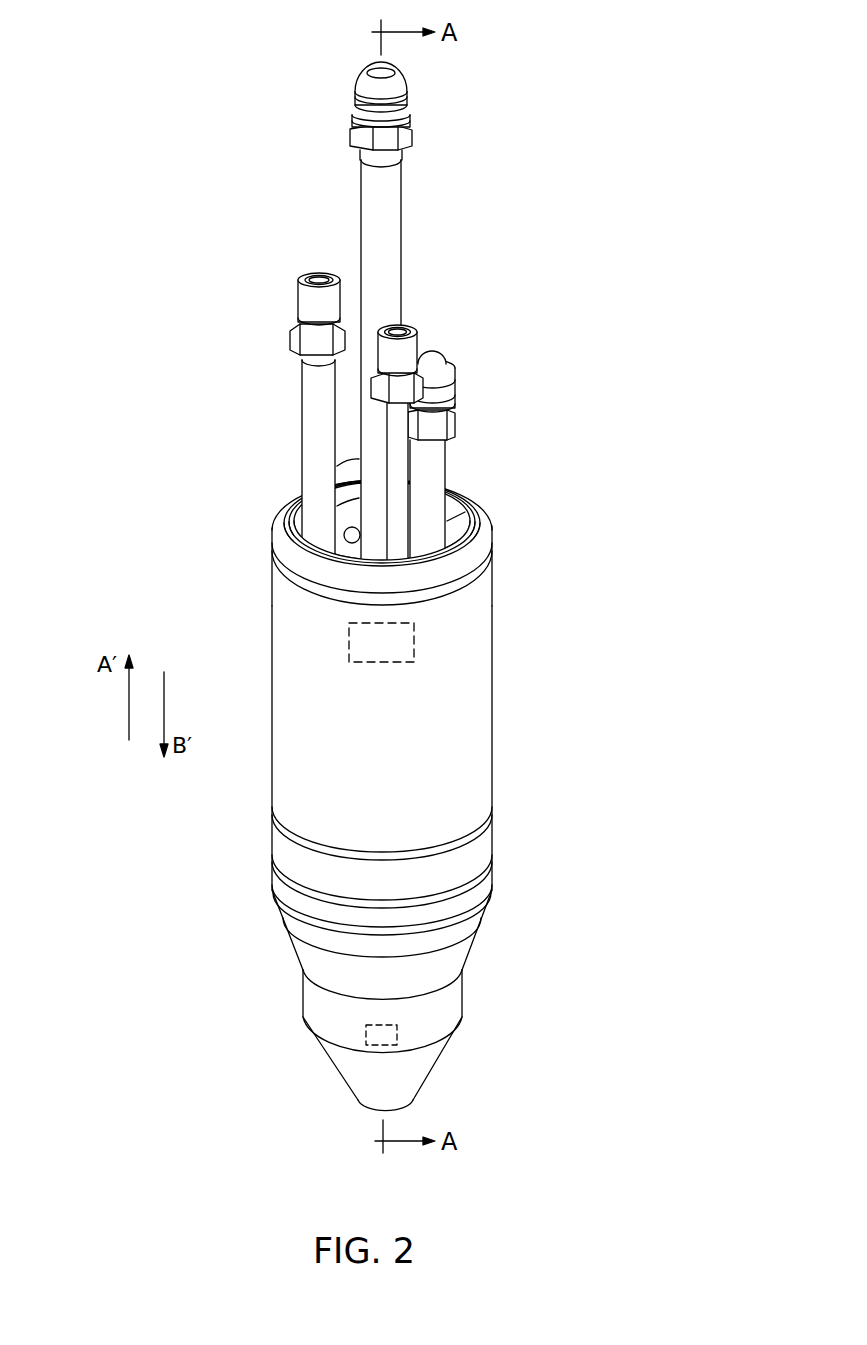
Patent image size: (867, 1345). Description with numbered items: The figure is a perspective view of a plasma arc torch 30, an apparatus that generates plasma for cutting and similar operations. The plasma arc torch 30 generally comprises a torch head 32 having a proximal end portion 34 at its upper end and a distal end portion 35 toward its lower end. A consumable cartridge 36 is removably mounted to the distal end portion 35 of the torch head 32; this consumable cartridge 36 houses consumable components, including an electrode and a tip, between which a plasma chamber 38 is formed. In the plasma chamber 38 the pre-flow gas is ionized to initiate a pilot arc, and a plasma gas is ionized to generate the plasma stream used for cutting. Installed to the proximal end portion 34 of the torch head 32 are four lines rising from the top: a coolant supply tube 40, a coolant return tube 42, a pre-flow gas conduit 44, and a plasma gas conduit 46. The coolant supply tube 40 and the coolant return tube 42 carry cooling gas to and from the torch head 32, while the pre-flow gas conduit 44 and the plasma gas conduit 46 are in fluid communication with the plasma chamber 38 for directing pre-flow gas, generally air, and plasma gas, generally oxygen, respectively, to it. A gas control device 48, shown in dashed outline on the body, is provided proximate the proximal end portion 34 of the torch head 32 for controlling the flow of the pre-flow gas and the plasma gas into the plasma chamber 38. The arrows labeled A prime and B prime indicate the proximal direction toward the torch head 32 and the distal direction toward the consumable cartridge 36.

The plasma arc torch 30 is at (648, 452).
The torch head 32 is at (513, 652).
The proximal end portion 34 is at (256, 564).
The distal end portion 35 is at (278, 968).
The consumable cartridge 36 is at (485, 984).
The plasma chamber 38 is at (397, 1032).
The coolant supply tube 40 is at (368, 226).
The coolant return tube 42 is at (438, 452).
The pre-flow gas conduit 44 is at (313, 413).
The plasma gas conduit 46 is at (398, 472).
The gas control device 48 is at (414, 641).